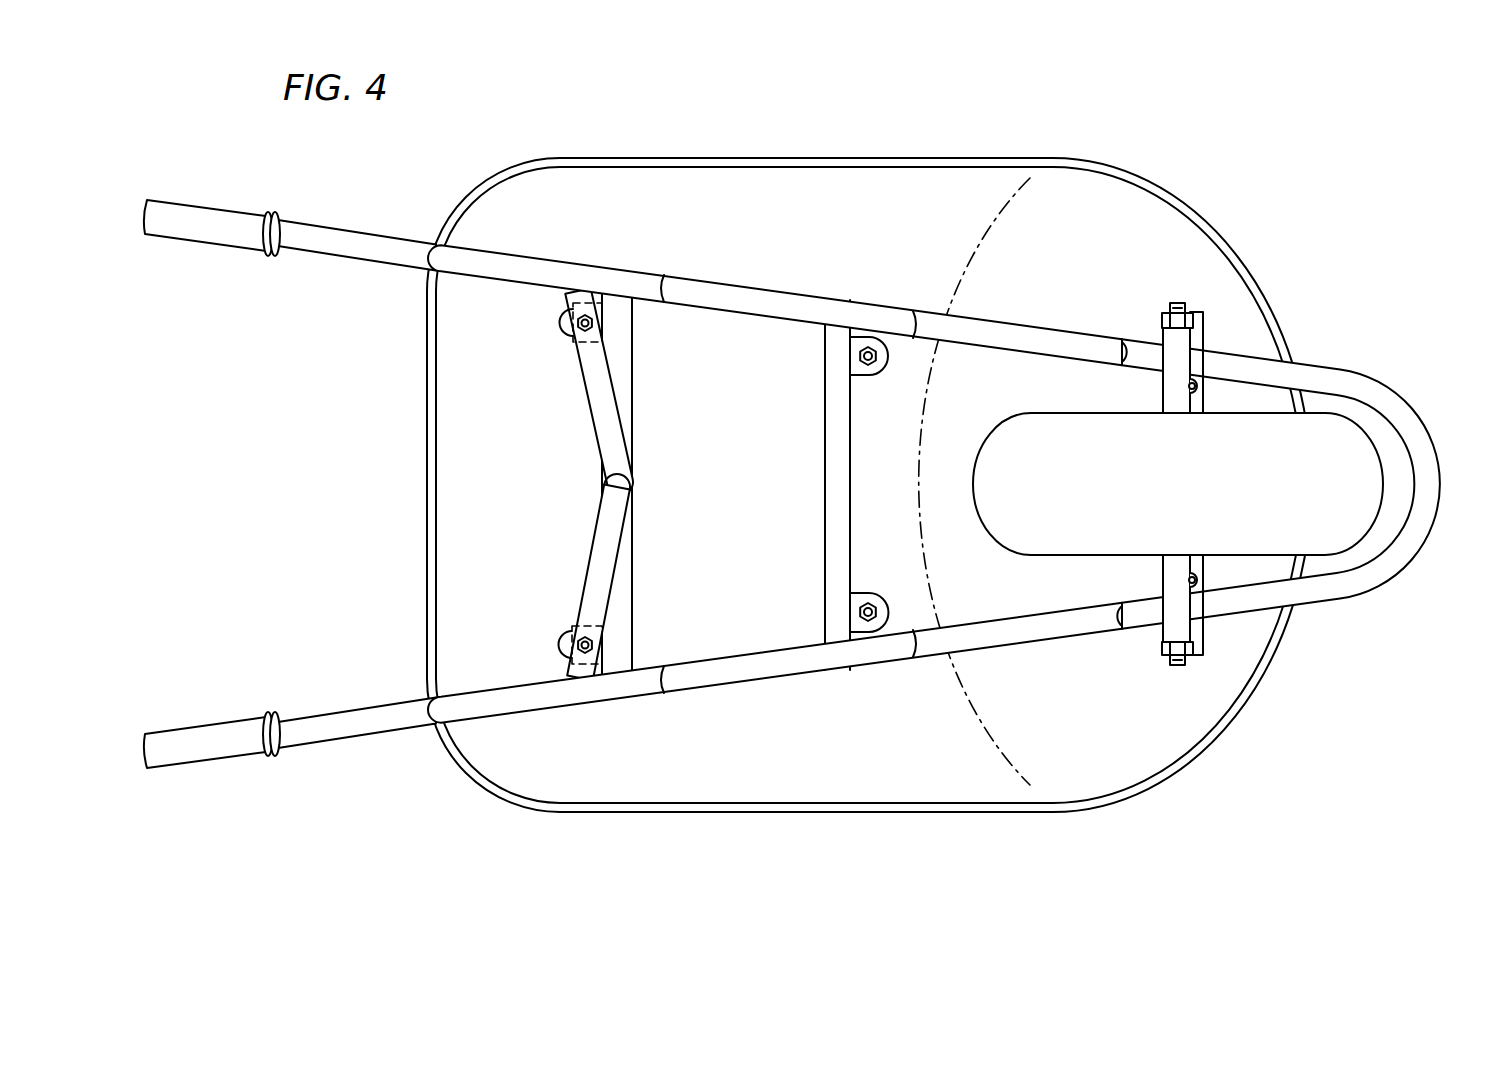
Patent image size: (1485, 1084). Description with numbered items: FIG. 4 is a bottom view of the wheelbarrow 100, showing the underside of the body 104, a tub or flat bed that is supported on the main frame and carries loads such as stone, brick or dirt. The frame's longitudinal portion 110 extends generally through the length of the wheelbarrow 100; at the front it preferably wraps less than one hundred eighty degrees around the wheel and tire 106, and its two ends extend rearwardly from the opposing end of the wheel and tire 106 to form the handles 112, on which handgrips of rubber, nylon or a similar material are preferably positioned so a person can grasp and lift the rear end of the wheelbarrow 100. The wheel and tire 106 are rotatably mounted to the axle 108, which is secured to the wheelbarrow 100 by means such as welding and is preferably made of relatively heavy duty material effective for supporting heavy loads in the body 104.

The wheelbarrow 100 is at (792, 467).
The body 104 is at (420, 433).
The wheel and tire 106 is at (1185, 494).
The axle 108 is at (1178, 301).
The longitudinal portion 110 is at (387, 257).
The handles 112 is at (237, 238).